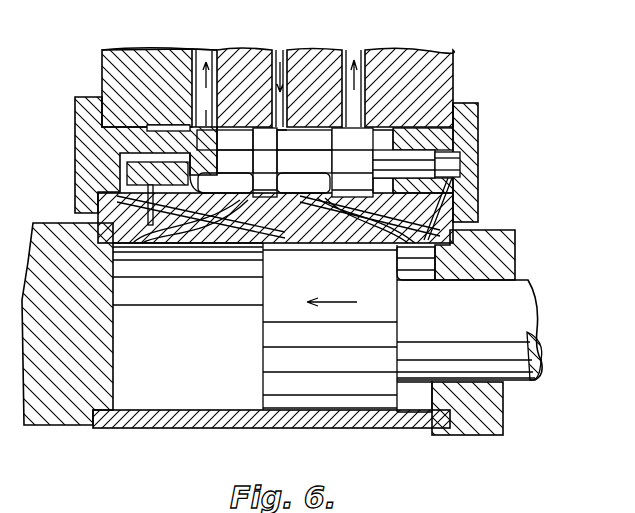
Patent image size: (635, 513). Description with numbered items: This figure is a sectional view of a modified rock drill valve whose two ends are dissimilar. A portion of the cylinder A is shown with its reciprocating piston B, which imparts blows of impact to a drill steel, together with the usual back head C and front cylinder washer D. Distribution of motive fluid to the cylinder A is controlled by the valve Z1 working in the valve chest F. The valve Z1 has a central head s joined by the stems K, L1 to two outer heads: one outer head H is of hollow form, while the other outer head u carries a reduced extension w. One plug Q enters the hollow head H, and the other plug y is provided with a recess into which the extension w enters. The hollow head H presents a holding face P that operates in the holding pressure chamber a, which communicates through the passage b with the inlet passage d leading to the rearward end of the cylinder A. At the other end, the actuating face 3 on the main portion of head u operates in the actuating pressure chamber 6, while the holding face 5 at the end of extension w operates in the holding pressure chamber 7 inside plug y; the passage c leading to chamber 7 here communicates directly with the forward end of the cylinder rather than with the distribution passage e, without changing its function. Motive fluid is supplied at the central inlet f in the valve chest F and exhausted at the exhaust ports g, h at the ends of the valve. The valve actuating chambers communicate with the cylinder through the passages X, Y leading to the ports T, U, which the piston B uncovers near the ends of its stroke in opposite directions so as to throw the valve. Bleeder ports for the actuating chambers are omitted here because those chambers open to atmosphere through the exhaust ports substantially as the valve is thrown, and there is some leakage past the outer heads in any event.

The outer head H is at (178, 120).
The valve chest F is at (430, 60).
The valve Z1 is at (258, 128).
The inlet f is at (307, 155).
The outer head u is at (365, 133).
The exhaust port h is at (352, 140).
The stem L1 is at (296, 95).
The stem K is at (230, 150).
The exhaust port g is at (172, 150).
The central head s is at (255, 130).
The plug Q is at (90, 147).
The holding pressure chamber a is at (140, 125).
The holding face P is at (173, 175).
The inlet passage d is at (173, 220).
The passage b is at (100, 218).
The passage Y is at (223, 218).
The port U is at (315, 200).
The passage X is at (307, 222).
The port T is at (237, 250).
The inlet passage e is at (378, 224).
The plug y is at (468, 145).
The passage c is at (448, 213).
The reduced extension w is at (418, 160).
The holding face 5 is at (447, 160).
The holding pressure chamber 7 is at (450, 172).
The actuating pressure chamber 6 is at (383, 187).
The actuating face 3 is at (435, 97).
The back head C is at (63, 413).
The piston B is at (287, 395).
The cylinder A is at (382, 428).
The front cylinder washer D is at (478, 418).